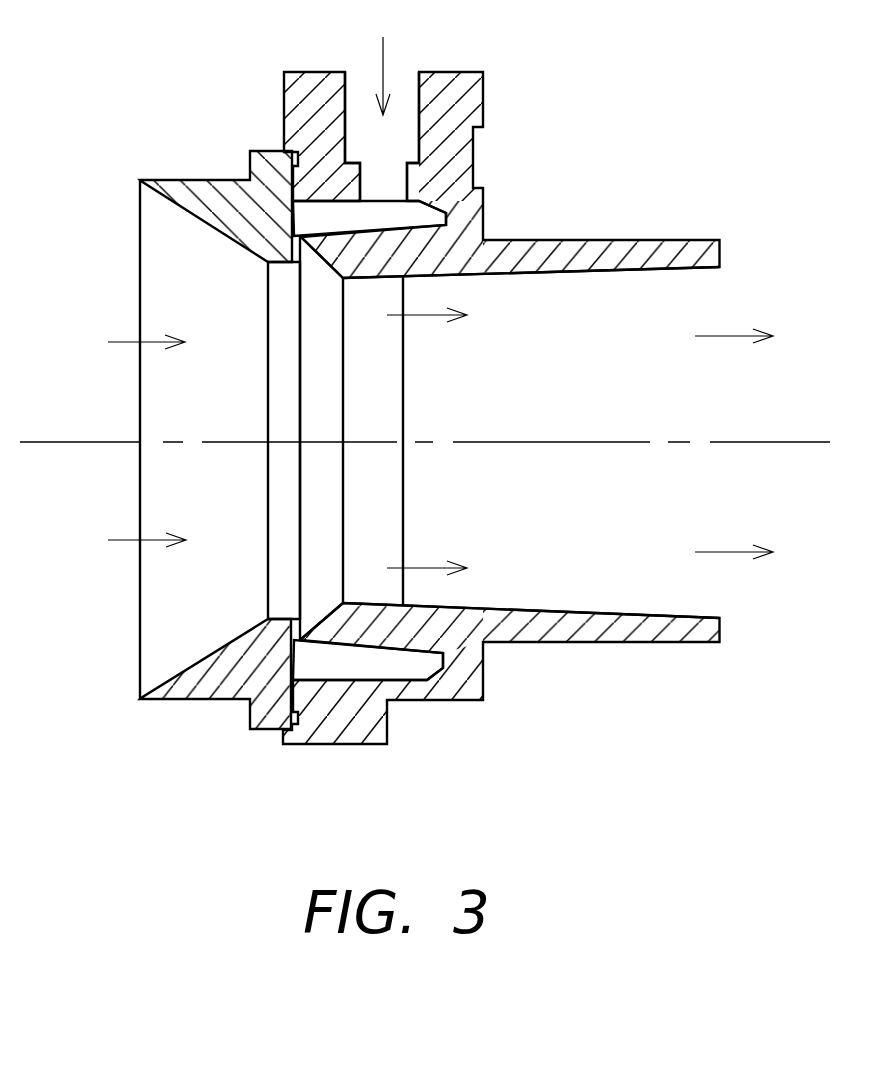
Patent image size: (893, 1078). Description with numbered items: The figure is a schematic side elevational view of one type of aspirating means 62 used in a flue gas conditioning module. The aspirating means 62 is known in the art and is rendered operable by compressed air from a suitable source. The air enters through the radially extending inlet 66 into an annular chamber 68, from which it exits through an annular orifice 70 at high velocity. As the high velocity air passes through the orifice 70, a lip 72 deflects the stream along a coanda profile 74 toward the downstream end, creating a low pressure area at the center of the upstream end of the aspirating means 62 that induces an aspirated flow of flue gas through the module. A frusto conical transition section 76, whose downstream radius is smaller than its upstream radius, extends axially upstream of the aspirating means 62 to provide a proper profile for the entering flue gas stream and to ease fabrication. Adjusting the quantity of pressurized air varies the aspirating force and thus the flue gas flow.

The aspirating means 62 is at (564, 210).
The radially extending inlet 66 is at (418, 98).
The annular chamber 68 is at (444, 205).
The annular orifice 70 is at (293, 240).
The lip 72 is at (282, 498).
The coanda profile 74 is at (367, 279).
The frusto conical transition section 76 is at (306, 239).